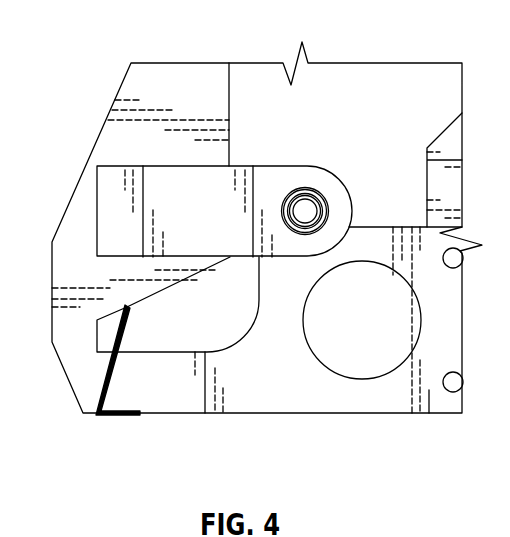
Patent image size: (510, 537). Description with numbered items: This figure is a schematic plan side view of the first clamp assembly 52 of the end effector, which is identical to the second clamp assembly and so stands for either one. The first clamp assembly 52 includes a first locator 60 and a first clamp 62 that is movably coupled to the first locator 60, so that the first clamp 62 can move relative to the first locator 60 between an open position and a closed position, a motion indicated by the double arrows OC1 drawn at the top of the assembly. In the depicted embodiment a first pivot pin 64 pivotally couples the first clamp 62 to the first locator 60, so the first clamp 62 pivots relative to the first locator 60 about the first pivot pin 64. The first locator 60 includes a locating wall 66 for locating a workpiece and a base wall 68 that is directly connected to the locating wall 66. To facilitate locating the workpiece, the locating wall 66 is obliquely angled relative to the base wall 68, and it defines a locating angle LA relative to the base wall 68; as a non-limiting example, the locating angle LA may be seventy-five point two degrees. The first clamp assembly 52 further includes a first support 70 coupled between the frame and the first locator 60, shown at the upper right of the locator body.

The first clamp assembly 52 is at (82, 118).
The double arrows OC1 is at (148, 33).
The first locator 60 is at (378, 400).
The first clamp 62 is at (180, 77).
The first pivot pin 64 is at (307, 208).
The locating wall 66 is at (107, 373).
The base wall 68 is at (210, 413).
The first support 70 is at (447, 130).
The locating angle LA is at (111, 388).